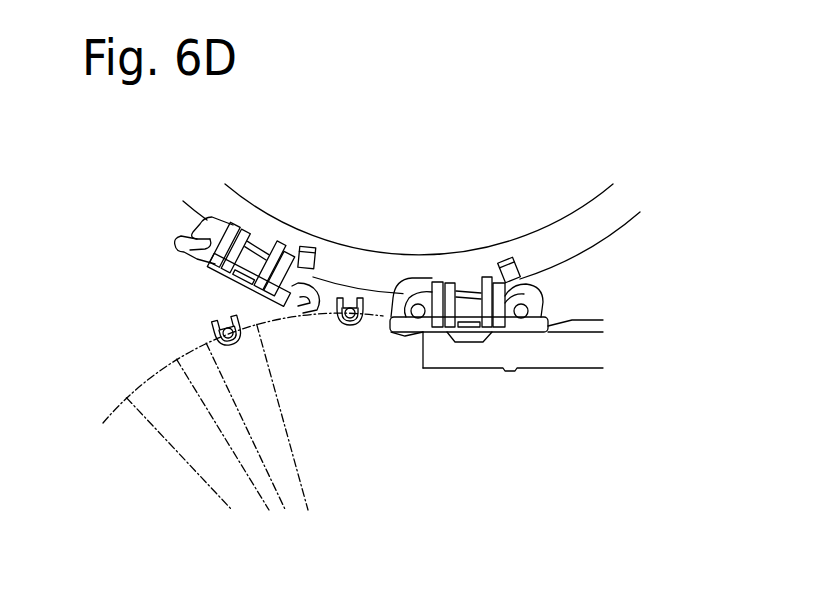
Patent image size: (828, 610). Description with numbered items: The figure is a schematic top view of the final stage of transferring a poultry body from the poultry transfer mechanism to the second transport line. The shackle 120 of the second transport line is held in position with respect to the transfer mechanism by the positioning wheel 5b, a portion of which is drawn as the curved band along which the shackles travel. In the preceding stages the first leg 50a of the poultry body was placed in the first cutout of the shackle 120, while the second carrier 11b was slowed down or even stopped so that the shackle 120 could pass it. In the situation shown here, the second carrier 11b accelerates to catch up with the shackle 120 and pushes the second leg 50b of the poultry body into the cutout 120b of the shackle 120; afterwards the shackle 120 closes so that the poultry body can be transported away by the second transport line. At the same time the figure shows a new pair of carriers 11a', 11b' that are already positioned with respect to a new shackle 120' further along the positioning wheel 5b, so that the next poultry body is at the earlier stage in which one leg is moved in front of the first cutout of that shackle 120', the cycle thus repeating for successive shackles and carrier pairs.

The positioning wheel 5b is at (345, 263).
The shackle 120 is at (521, 270).
The new shackle 120' is at (210, 260).
The cutout 120b is at (384, 294).
The leg 50a is at (520, 304).
The leg 50b is at (418, 304).
The carrier 11a' is at (346, 333).
The carrier 11b' is at (236, 348).
The second carrier 11b is at (495, 356).